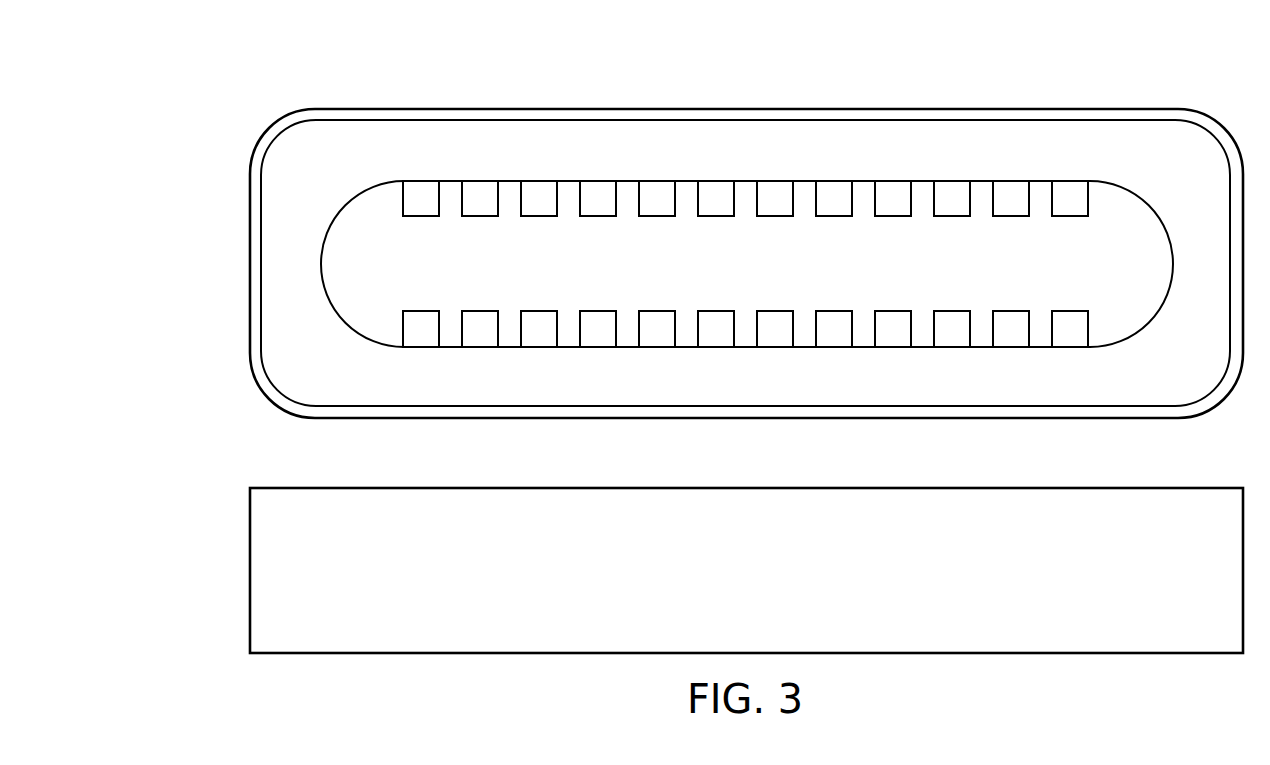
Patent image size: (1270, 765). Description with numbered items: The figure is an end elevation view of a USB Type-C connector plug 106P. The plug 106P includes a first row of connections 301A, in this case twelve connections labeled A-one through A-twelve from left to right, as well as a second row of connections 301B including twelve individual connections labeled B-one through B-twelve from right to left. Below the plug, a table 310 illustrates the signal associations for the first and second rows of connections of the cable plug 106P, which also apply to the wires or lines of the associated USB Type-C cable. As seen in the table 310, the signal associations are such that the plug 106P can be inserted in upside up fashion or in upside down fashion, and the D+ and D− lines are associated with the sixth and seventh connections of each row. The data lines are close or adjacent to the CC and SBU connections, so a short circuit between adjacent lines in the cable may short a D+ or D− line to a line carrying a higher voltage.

The USB Type-C connector plug 106P is at (745, 106).
The first row of connections 301A is at (422, 216).
The second row of connections 301B is at (482, 310).
The table 310 is at (747, 488).